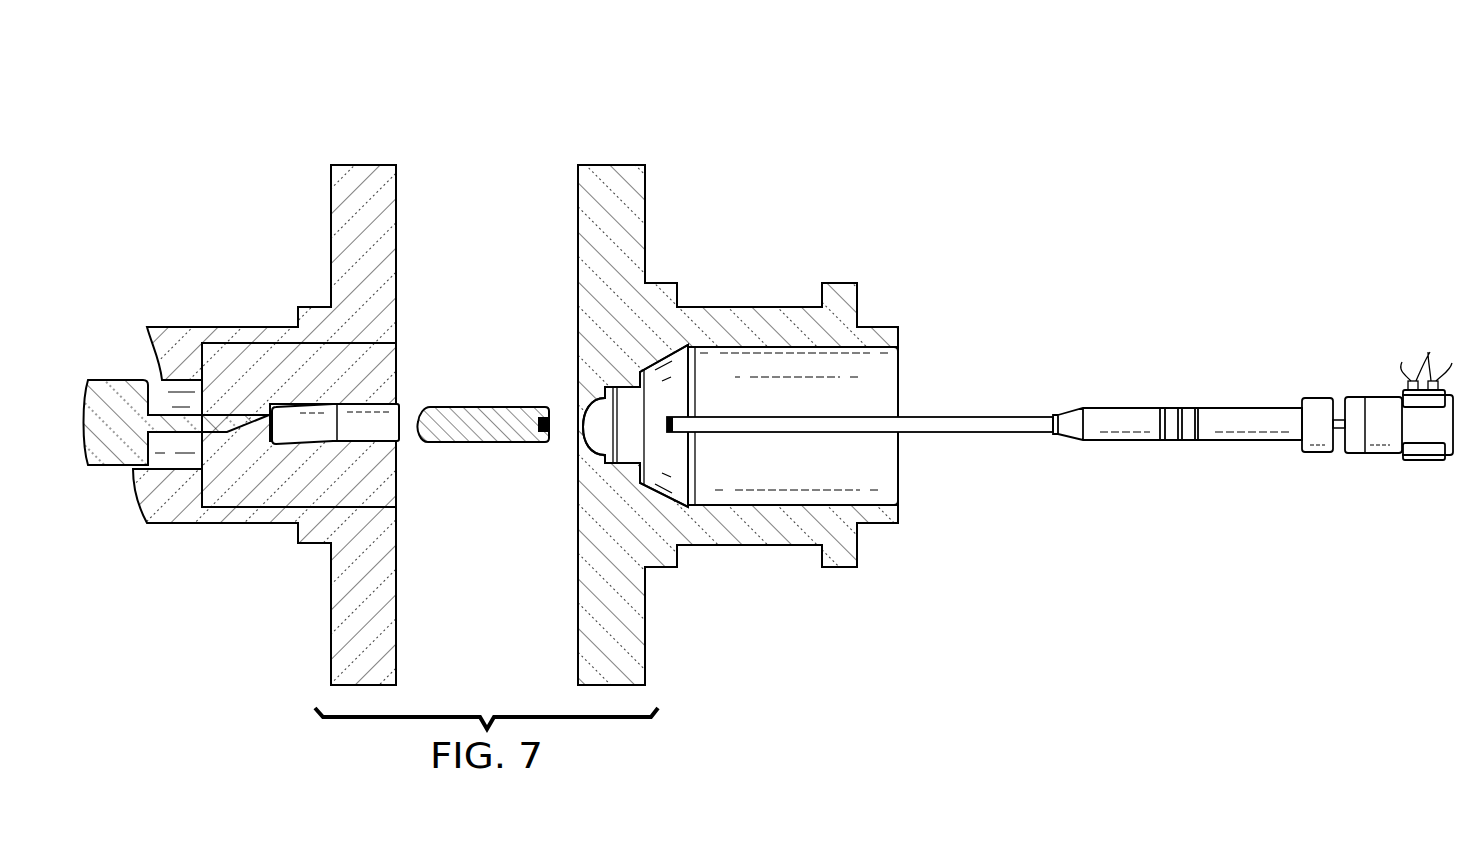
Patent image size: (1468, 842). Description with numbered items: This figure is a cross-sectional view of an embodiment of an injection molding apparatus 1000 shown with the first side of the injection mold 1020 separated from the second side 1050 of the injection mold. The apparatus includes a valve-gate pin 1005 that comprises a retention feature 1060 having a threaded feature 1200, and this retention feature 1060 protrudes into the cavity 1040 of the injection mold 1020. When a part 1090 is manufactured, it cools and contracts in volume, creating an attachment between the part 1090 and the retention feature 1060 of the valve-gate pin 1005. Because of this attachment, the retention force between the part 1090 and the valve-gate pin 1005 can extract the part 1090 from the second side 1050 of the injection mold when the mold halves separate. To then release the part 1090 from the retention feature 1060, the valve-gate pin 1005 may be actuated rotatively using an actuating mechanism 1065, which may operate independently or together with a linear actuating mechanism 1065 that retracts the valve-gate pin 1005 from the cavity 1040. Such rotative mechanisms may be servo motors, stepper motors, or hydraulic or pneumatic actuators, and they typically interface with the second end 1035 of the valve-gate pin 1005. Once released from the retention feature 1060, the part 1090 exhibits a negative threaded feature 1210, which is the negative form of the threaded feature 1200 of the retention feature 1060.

The injection molding apparatus 1000 is at (1015, 369).
The valve-gate pin 1005 is at (1118, 407).
The injection mold 1020 is at (492, 294).
The second end of the valve-gate pin 1035 is at (1316, 454).
The cavity 1040 is at (398, 441).
The second side of the injection mold 1050 is at (330, 223).
The retention feature 1060 is at (716, 426).
The actuating mechanism 1065 is at (1352, 396).
The part 1090 is at (470, 406).
The threaded feature 1200 is at (667, 434).
The negative threaded feature 1210 is at (548, 429).